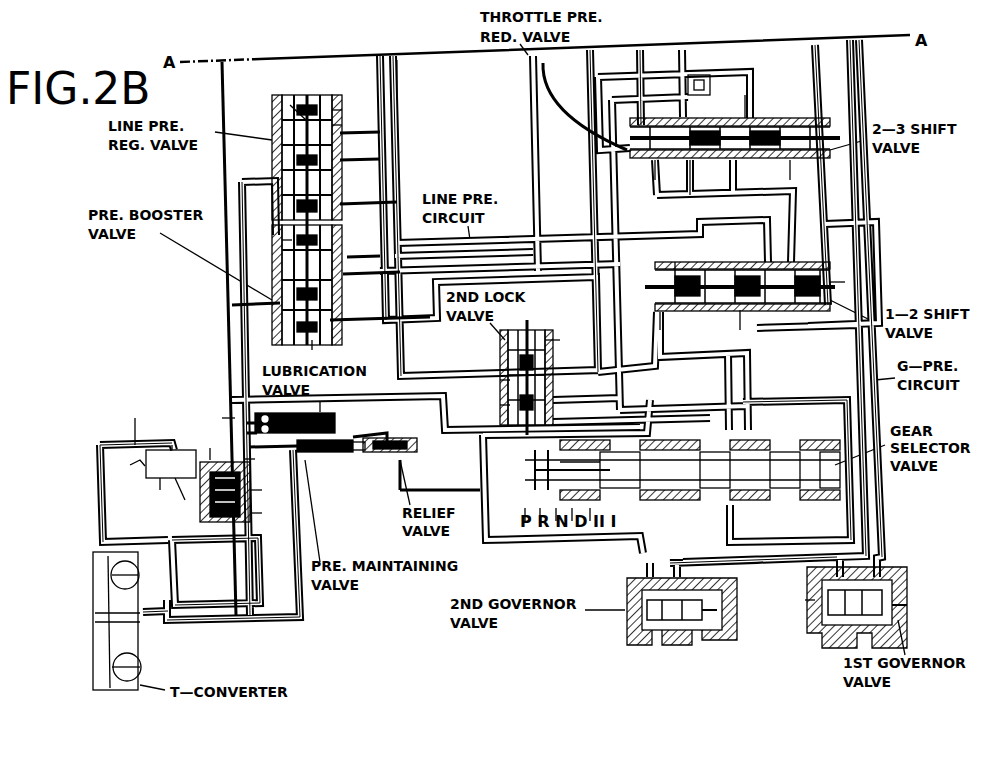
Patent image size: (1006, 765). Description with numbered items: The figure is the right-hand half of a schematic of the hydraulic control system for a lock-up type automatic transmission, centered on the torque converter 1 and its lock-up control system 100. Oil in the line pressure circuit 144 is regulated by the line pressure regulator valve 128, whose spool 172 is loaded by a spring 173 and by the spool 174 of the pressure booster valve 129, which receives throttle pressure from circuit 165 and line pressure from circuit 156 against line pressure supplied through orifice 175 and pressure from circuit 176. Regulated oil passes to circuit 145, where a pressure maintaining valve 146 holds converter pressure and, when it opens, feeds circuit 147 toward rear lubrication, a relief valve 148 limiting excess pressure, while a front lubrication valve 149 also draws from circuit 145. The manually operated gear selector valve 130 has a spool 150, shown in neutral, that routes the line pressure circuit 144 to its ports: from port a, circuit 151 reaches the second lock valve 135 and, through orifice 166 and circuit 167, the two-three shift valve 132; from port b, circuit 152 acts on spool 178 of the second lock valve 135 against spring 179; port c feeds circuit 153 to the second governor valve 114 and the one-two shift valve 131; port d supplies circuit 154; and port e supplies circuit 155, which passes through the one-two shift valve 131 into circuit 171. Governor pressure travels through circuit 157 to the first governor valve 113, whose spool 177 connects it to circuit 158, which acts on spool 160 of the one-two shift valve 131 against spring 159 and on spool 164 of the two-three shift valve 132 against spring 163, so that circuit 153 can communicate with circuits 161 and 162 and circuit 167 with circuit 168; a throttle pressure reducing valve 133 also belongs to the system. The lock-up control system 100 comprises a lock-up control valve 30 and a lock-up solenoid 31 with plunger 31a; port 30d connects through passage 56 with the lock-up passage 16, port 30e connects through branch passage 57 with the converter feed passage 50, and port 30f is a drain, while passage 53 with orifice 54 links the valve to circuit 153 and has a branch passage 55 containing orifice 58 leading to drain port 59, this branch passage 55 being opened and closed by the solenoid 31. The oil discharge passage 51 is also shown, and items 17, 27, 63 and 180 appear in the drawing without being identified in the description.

The torque converter 1 is at (117, 610).
The lock-up passage 16 is at (160, 612).
The converter housing 17 is at (95, 672).
The converter passage 27 is at (97, 607).
The lock-up control valve 30 is at (176, 473).
The port 30d is at (175, 445).
The port 30e is at (182, 500).
The drain port 30f is at (160, 480).
The lock-up solenoid 31 is at (210, 525).
The plunger 31a is at (268, 489).
The torque converter operating oil feed passage 50 is at (238, 603).
The oil discharge passage 51 is at (240, 622).
The passage 53 is at (230, 425).
The orifice 54 is at (260, 460).
The branch passage 55 is at (215, 550).
The passage 56 is at (100, 488).
The branch passage 57 is at (241, 570).
The orifice 58 is at (214, 447).
The drain port 59 is at (263, 514).
The lock-up clutch 63 is at (115, 562).
The lock-up control system 100 is at (149, 416).
The first governor valve 113 is at (809, 605).
The second governor valve 114 is at (725, 618).
The line pressure regulator valve 128 is at (295, 105).
The pressure booster valve 129 is at (285, 332).
The gear selector valve 130 is at (530, 488).
The 1-2 shift valve 131 is at (830, 272).
The 2-3 shift valve 132 is at (830, 132).
The throttle pressure reducing valve 133 is at (655, 165).
The second lock valve 135 is at (530, 330).
The line pressure circuit 144 is at (398, 68).
The circuit 145 is at (246, 182).
The pressure maintaining valve 146 is at (310, 452).
The circuit 147 is at (352, 450).
The relief valve 148 is at (398, 452).
The front lubrication valve 149 is at (335, 418).
The spool 150 is at (590, 460).
The circuit 151 is at (590, 101).
The circuit 152 is at (630, 448).
The circuit 153 is at (222, 84).
The circuit 154 is at (855, 60).
The circuit 155 is at (750, 335).
The circuit 156 is at (335, 285).
The circuit 157 is at (753, 576).
The circuit 158 is at (815, 70).
The spring 159 is at (660, 328).
The spool 160 is at (845, 290).
The circuit 161 is at (700, 268).
The circuit 162 is at (400, 88).
The spring 163 is at (708, 177).
The spool 164 is at (799, 173).
The circuit 165 is at (530, 60).
The orifice 166 is at (712, 85).
The circuit 167 is at (748, 105).
The circuit 168 is at (400, 108).
The circuit 171 is at (855, 77).
The spool 172 is at (290, 105).
The spring 173 is at (284, 242).
The spool 174 is at (315, 338).
The orifice 175 is at (342, 122).
The circuit 176 is at (340, 105).
The spool 177 is at (808, 615).
The spool 178 is at (500, 380).
The spring 179 is at (500, 405).
The passage 180 is at (543, 165).